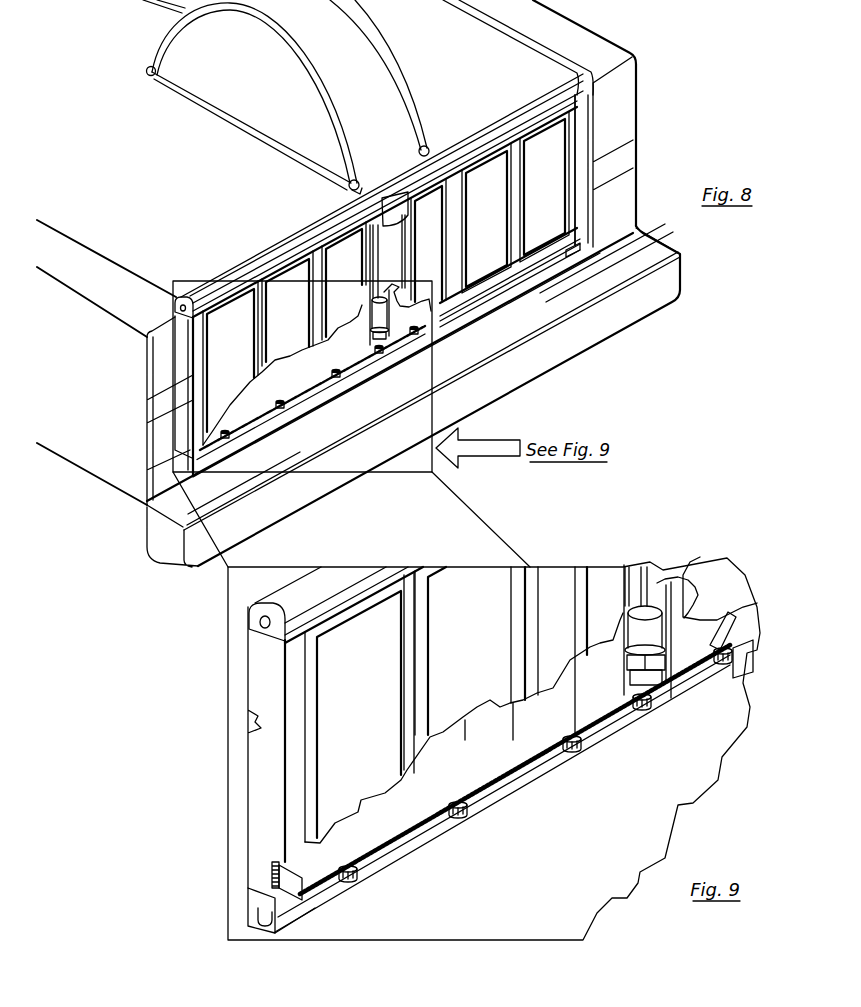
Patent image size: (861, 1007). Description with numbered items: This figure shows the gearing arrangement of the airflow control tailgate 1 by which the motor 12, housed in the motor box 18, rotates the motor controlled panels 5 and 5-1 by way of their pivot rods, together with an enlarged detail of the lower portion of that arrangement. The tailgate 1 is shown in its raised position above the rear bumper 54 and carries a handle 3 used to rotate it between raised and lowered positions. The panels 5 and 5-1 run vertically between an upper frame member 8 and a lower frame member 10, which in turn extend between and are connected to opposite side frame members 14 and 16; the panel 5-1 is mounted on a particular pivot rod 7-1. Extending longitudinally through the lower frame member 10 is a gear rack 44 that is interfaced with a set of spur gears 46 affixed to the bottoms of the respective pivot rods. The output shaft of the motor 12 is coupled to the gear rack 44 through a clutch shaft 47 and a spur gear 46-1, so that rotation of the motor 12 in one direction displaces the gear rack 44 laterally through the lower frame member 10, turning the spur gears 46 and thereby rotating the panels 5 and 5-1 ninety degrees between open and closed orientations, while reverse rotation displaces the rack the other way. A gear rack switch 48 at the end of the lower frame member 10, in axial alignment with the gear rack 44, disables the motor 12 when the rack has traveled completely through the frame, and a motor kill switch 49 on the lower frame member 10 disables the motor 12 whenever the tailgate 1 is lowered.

In FIG. 8, the airflow control tailgate 1 is at (658, 154).
In FIG. 8, the handle 3 is at (357, 210).
In FIG. 8, the motor controlled panels 5 is at (228, 318).
In FIG. 9, the motor controlled panels 5 is at (352, 635).
In FIG. 8, the panel 5-1 is at (337, 257).
In FIG. 9, the panel 5-1 is at (452, 600).
In FIG. 9, the pivot rod 7-1 is at (580, 753).
In FIG. 8, the upper frame member 8 is at (343, 180).
In FIG. 8, the lower frame member 10 is at (567, 317).
In FIG. 9, the lower frame member 10 is at (750, 666).
In FIG. 8, the motor 12 is at (372, 312).
In FIG. 9, the motor 12 is at (641, 618).
In FIG. 8, the side frame member 14 is at (197, 370).
In FIG. 8, the side frame member 16 is at (628, 85).
In FIG. 8, the motor box 18 is at (395, 243).
In FIG. 9, the motor box 18 is at (660, 580).
In FIG. 8, the gear rack 44 is at (320, 385).
In FIG. 9, the gear rack 44 is at (413, 837).
In FIG. 9, the spur gears 46 is at (348, 886).
In FIG. 9, the spur gear 46-1 is at (652, 708).
In FIG. 9, the clutch shaft 47 is at (465, 820).
In FIG. 9, the gear rack switches 48 is at (278, 928).
In FIG. 8, the motor kill switch 49 is at (585, 260).
In FIG. 8, the rear bumper 54 is at (157, 540).